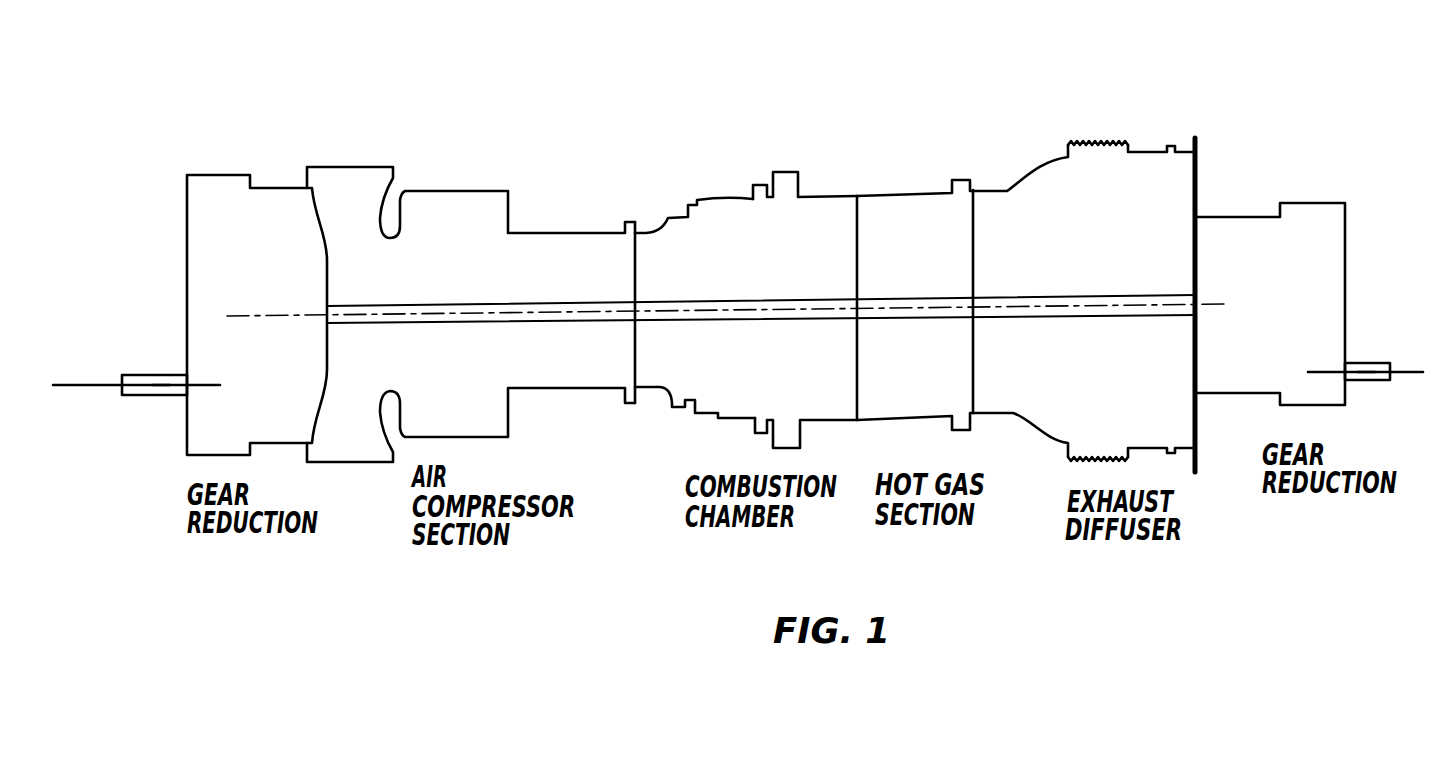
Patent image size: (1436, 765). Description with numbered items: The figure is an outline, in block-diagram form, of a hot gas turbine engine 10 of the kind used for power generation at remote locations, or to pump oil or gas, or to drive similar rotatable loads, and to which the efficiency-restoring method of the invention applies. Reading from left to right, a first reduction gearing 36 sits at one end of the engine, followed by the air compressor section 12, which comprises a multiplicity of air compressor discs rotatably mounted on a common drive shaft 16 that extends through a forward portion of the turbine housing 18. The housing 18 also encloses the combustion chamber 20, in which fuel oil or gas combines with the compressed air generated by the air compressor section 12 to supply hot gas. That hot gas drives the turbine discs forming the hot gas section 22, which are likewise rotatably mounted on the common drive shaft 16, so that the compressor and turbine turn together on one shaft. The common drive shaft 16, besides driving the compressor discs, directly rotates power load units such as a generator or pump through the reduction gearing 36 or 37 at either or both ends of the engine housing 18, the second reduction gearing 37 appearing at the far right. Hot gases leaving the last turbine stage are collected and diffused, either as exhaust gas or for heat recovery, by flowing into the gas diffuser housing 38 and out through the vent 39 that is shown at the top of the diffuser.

The gas turbine engine 10 is at (640, 101).
The air compressor section 12 is at (443, 198).
The common drive shaft 16 is at (612, 300).
The turbine housing 18 is at (725, 210).
The combustion chamber 20 is at (800, 227).
The hot gas section 22 is at (920, 207).
The reduction gearing 36 is at (232, 188).
The reduction gearing 37 is at (1227, 212).
The gas diffuser housing 38 is at (1047, 181).
The vent 39 is at (1097, 143).